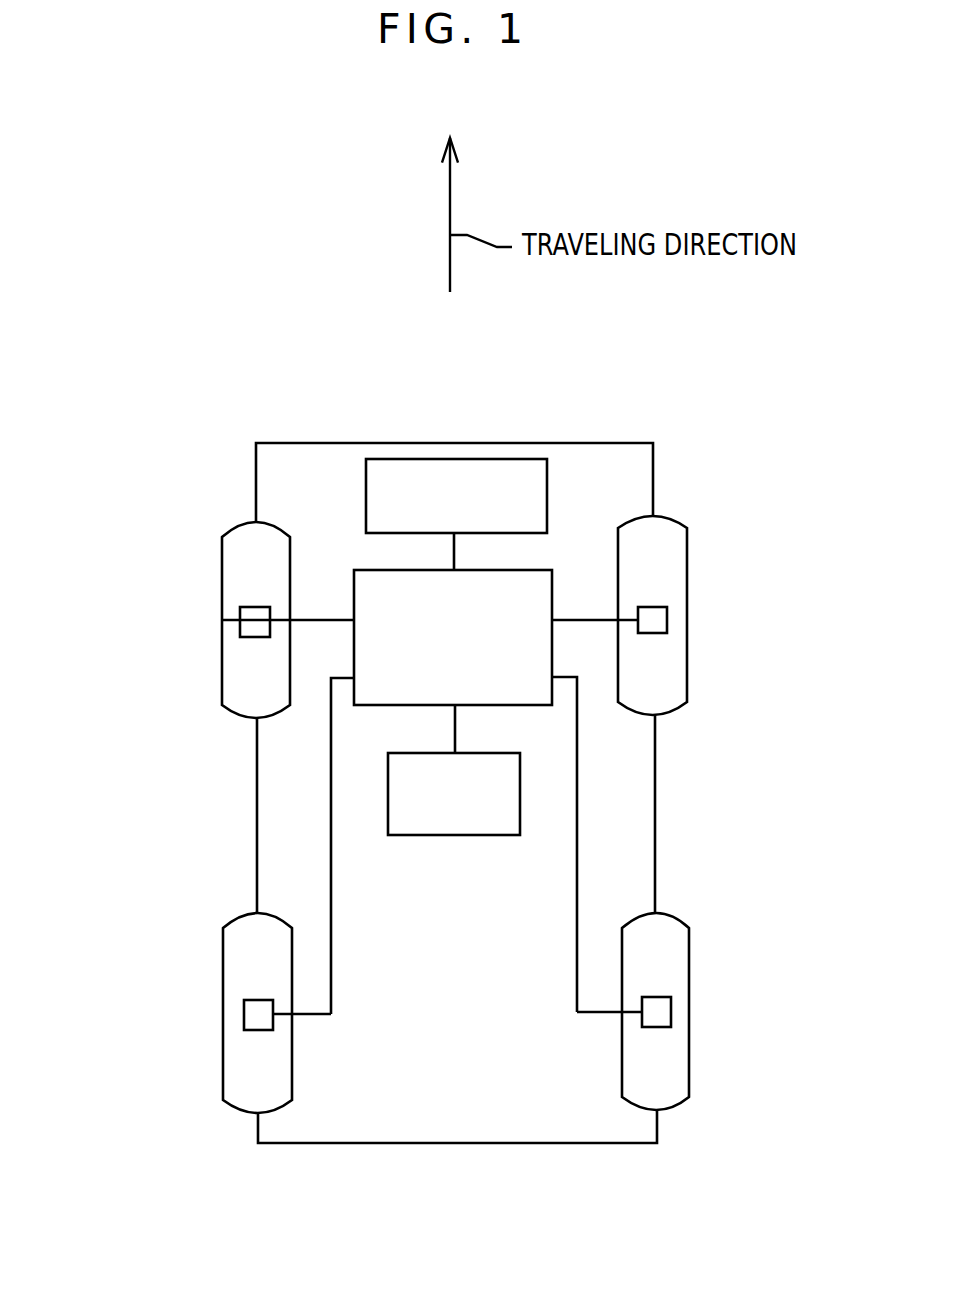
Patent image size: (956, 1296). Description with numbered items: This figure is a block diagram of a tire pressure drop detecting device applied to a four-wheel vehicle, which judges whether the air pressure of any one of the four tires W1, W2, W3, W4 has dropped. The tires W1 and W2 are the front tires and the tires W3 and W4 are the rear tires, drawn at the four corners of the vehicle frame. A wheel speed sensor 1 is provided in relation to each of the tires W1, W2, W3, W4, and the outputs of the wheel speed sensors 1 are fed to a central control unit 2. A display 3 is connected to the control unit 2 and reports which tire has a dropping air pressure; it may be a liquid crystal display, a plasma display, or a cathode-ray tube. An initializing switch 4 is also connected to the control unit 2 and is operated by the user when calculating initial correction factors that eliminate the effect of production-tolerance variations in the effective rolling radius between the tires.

The wheel speed sensor 1 is at (240, 619).
The control unit 2 is at (536, 568).
The display 3 is at (453, 836).
The initializing switch 4 is at (366, 497).
The tire W1 is at (212, 537).
The tire W2 is at (697, 525).
The tire W3 is at (218, 1103).
The tire W4 is at (697, 1105).